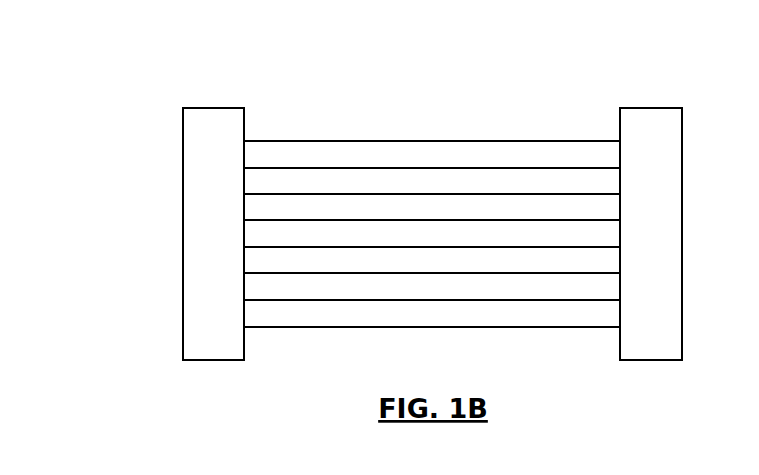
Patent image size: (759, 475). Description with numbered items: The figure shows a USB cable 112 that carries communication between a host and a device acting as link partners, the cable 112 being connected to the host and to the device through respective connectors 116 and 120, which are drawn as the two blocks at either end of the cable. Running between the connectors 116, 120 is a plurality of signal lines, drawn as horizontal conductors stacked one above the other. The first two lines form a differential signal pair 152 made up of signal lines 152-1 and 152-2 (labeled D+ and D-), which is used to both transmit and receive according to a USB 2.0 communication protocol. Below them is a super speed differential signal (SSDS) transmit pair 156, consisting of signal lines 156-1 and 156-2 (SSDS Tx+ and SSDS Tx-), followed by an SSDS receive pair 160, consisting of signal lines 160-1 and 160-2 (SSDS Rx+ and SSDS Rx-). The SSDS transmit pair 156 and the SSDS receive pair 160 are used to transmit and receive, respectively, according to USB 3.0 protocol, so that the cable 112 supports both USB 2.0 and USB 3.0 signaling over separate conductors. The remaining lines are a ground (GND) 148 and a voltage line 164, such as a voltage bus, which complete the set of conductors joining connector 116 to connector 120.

The USB cable 112 is at (550, 77).
The connector 116 is at (213, 108).
The connector 120 is at (652, 108).
The differential signal pair 152 is at (228, 156).
The signal line 152-1 is at (313, 140).
The signal line 152-2 is at (315, 167).
The super speed differential signal (SSDS) transmit pair 156 is at (228, 206).
The signal line 156-1 is at (524, 194).
The signal line 156-2 is at (527, 220).
The SSDS receive pair 160 is at (236, 262).
The signal line 160-1 is at (322, 247).
The signal line 160-2 is at (322, 273).
The ground (GND) 148 is at (540, 300).
The voltage line 164 is at (540, 327).